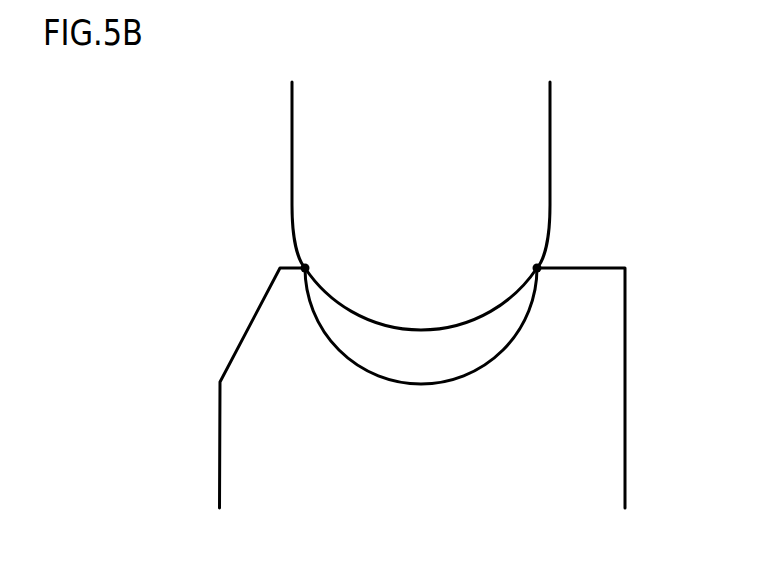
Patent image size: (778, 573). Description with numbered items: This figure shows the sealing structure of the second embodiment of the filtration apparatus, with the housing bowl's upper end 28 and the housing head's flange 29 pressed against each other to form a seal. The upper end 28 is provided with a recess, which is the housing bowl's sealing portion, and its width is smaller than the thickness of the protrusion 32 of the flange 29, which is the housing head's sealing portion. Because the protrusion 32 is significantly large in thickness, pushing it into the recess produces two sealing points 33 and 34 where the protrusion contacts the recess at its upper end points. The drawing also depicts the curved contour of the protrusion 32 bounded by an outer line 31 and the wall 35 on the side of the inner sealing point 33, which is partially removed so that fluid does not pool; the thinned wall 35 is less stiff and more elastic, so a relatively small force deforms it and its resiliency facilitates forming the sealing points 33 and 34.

The upper end 28 is at (565, 448).
The flange 29 is at (363, 145).
The outer arc (bonding layer boundary) 31 is at (490, 365).
The protrusion 32 is at (423, 300).
The inner sealing point 33 is at (305, 268).
The sealing point 34 is at (537, 268).
The left member (inclined wall) 35 is at (245, 313).